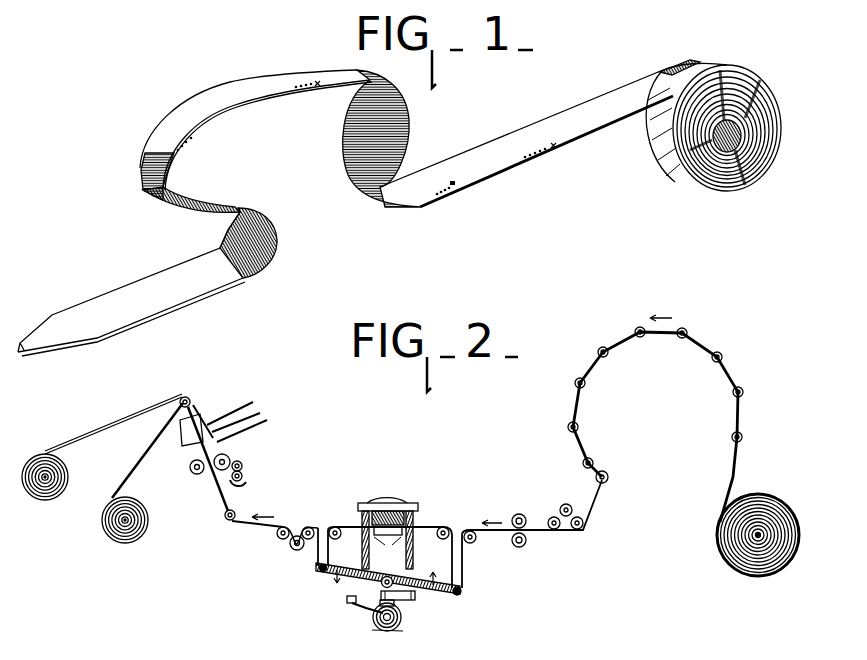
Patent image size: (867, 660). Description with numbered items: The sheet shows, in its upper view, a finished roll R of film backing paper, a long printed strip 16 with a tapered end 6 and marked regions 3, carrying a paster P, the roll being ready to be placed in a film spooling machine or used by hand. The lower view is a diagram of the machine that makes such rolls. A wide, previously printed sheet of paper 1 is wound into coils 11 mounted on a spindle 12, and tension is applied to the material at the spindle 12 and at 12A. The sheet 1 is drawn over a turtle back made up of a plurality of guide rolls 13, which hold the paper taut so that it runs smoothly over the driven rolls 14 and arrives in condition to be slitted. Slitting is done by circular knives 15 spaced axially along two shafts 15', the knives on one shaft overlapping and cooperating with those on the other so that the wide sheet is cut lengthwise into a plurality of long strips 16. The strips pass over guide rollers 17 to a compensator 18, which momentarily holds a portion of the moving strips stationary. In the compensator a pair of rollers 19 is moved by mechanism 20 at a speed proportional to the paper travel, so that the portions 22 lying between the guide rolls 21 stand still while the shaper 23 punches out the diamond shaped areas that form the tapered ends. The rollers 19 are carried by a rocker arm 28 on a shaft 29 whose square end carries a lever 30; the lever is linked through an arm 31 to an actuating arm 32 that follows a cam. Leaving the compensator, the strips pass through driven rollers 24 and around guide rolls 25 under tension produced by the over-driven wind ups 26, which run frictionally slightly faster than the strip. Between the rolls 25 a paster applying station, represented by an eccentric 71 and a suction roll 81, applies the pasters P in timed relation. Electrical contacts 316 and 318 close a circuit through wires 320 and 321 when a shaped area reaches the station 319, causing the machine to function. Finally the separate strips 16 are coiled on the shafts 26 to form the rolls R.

In FIG. 1, the long strips 16 is at (230, 105).
In FIG. 2, the long strips 16 is at (60, 462).
In FIG. 1, the perforation marks 3 is at (205, 136).
In FIG. 1, the pointed leading end of tape 6 is at (44, 322).
In FIG. 1, the pasters P is at (668, 70).
In FIG. 1, the roll R is at (709, 182).
In FIG. 2, the wide sheet of paper 1 is at (713, 347).
In FIG. 2, the coils 11 is at (760, 495).
In FIG. 2, the spindle 12 is at (745, 537).
In FIG. 2, the tension point 12A is at (600, 477).
In FIG. 2, the guide rolls 13 is at (588, 458).
In FIG. 2, the driven rolls 14 is at (578, 516).
In FIG. 2, the circular knives 15 is at (523, 529).
In FIG. 2, the shafts 15' is at (528, 538).
In FIG. 2, the guide rollers 17 is at (476, 542).
In FIG. 2, the compensator 18 is at (414, 629).
In FIG. 2, the rollers 19 is at (320, 568).
In FIG. 2, the mechanism 20 is at (408, 601).
In FIG. 2, the guide rolls 21 is at (335, 527).
In FIG. 2, the portions 22 is at (351, 526).
In FIG. 2, the shaper 23 is at (395, 502).
In FIG. 2, the driven rollers 24 is at (292, 524).
In FIG. 2, the guide rolls 25 is at (191, 393).
In FIG. 2, the wind ups 26 is at (45, 480).
In FIG. 2, the rocker arm 28 is at (330, 577).
In FIG. 2, the shaft 29 is at (387, 576).
In FIG. 2, the lever 30 is at (348, 599).
In FIG. 2, the arm 31 is at (358, 608).
In FIG. 2, the actuating arm 32 is at (378, 623).
In FIG. 2, the eccentric 71 is at (197, 475).
In FIG. 2, the suction roll 81 is at (231, 457).
In FIG. 2, the contact 316 is at (200, 407).
In FIG. 2, the contact 318 is at (195, 453).
In FIG. 2, the station 319 is at (267, 420).
In FIG. 2, the wire 320 is at (253, 402).
In FIG. 2, the wire 321 is at (260, 413).